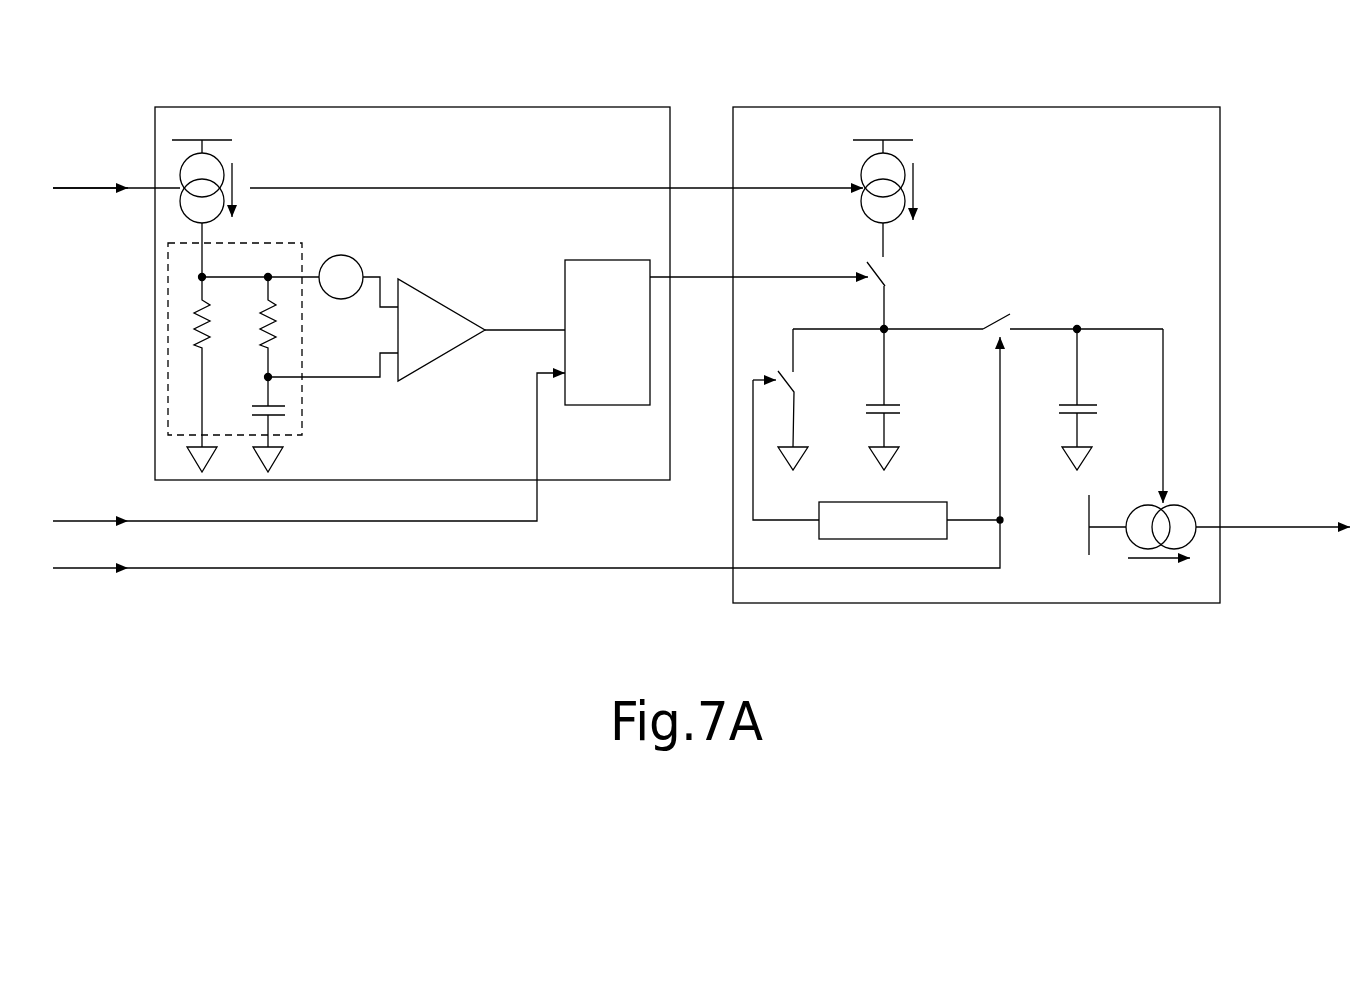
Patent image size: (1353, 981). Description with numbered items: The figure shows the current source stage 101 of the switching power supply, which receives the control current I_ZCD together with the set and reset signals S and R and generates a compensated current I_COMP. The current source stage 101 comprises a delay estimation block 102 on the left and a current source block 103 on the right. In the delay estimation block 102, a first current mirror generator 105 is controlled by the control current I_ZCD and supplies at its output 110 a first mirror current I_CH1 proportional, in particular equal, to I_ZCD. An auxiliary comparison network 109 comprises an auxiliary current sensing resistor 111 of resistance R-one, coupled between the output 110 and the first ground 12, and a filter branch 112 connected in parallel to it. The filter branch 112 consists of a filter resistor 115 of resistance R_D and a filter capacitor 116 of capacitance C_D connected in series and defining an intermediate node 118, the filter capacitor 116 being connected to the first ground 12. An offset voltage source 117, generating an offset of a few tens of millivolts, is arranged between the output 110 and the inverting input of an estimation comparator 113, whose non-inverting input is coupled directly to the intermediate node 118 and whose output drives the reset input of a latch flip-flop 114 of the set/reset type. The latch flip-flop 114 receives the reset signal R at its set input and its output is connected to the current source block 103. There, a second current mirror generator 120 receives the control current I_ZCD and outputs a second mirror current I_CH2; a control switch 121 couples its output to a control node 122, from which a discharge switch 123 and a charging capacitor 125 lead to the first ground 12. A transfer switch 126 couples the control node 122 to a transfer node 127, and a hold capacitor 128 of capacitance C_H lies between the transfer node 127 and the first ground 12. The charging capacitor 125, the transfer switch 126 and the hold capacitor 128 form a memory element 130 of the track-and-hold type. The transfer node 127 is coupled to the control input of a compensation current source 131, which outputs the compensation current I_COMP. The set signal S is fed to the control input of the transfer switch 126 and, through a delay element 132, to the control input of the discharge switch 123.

The current source stage 101 is at (1003, 60).
The delay estimation block 102 is at (472, 107).
The current source block 103 is at (1197, 107).
The first current mirror generator 105 is at (216, 160).
The auxiliary comparison network 109 is at (165, 405).
The output 110 is at (188, 273).
The auxiliary current sensing resistor 111 is at (193, 343).
The filter branch 112 is at (270, 274).
The estimation comparator 113 is at (470, 318).
The latch flip-flop 114 is at (606, 268).
The filter resistor 115 is at (286, 333).
The filter capacitor 116 is at (286, 413).
The offset voltage source 117 is at (362, 262).
The intermediate node 118 is at (266, 379).
The first ground 12 is at (190, 463).
The second current mirror generator 120 is at (862, 186).
The control switch 121 is at (880, 270).
The control node 122 is at (880, 328).
The discharge switch 123 is at (796, 384).
The charging capacitor 125 is at (895, 403).
The transfer switch 126 is at (996, 315).
The transfer node 127 is at (1079, 325).
The hold capacitor 128 is at (1088, 418).
The memory element 130 is at (1015, 282).
The compensation current source 131 is at (1180, 497).
The delay element 132 is at (820, 535).